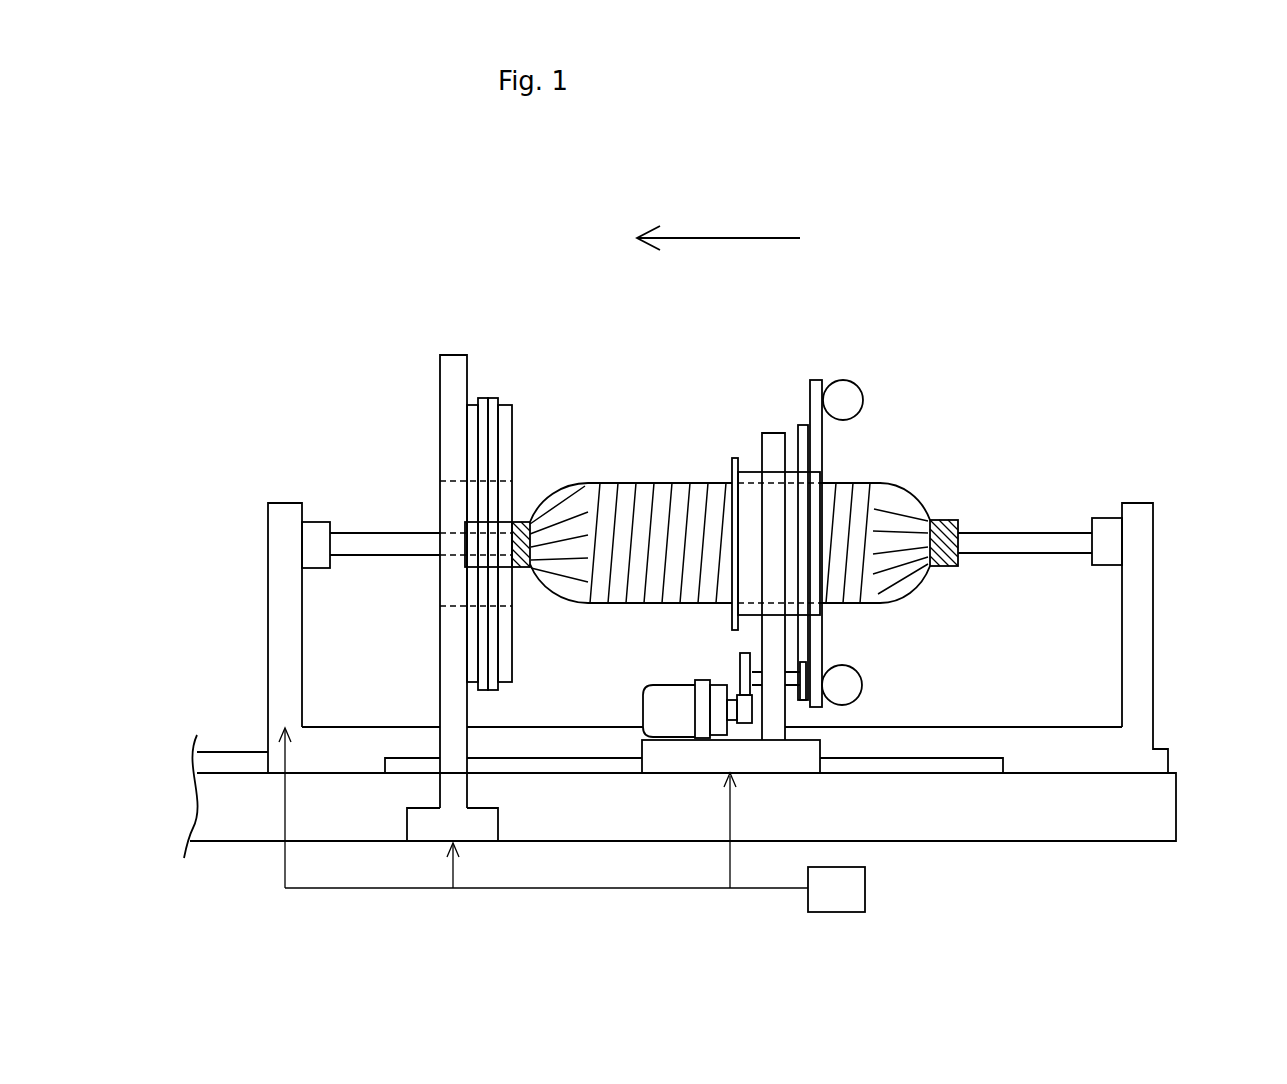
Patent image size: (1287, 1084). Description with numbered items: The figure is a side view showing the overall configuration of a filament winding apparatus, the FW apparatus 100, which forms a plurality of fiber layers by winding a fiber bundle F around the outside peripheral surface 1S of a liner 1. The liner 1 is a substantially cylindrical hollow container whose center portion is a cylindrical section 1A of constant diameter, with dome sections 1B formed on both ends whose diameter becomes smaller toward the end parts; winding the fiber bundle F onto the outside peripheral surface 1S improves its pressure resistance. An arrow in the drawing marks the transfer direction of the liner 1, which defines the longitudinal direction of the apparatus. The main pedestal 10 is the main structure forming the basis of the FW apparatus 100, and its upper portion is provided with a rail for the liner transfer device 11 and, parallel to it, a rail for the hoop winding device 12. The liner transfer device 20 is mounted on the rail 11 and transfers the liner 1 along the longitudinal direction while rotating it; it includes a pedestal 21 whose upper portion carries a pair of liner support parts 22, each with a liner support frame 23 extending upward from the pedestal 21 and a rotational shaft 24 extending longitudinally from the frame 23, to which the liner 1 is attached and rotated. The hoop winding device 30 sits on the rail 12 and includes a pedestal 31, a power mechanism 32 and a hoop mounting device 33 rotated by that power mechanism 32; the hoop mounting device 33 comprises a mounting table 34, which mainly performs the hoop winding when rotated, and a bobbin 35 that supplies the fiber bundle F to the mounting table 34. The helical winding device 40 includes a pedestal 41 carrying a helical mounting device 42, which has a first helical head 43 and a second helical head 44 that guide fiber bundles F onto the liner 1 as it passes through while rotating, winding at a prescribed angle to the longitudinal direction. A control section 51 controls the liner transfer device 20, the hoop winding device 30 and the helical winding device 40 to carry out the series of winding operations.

The FW apparatus 100 is at (333, 310).
The main pedestal 10 is at (990, 843).
The rail for the liner transfer device 11 is at (215, 752).
The rail for the hoop winding device 12 is at (555, 758).
The liner transfer device 20 is at (237, 455).
The pedestal 21 is at (362, 727).
The liner support part 22 is at (276, 494).
The liner support frame 23 is at (285, 582).
The rotational shaft 24 is at (387, 545).
The hoop winding device 30 is at (786, 335).
The pedestal 31 is at (772, 432).
The power mechanism 32 is at (639, 679).
The hoop mounting device 33 is at (821, 376).
The mounting table 34 is at (807, 398).
The bobbin 35 is at (860, 396).
The helical winding device 40 is at (455, 337).
The pedestal 41 is at (447, 370).
The helical mounting device 42 is at (509, 354).
The first helical head 43 is at (493, 398).
The second helical head 44 is at (486, 398).
The control section 51 is at (855, 890).
The liner 1 is at (687, 440).
The cylindrical section 1A is at (683, 603).
The dome section 1B is at (560, 605).
The outside peripheral surface 1S is at (632, 483).
The fiber bundle F is at (597, 497).